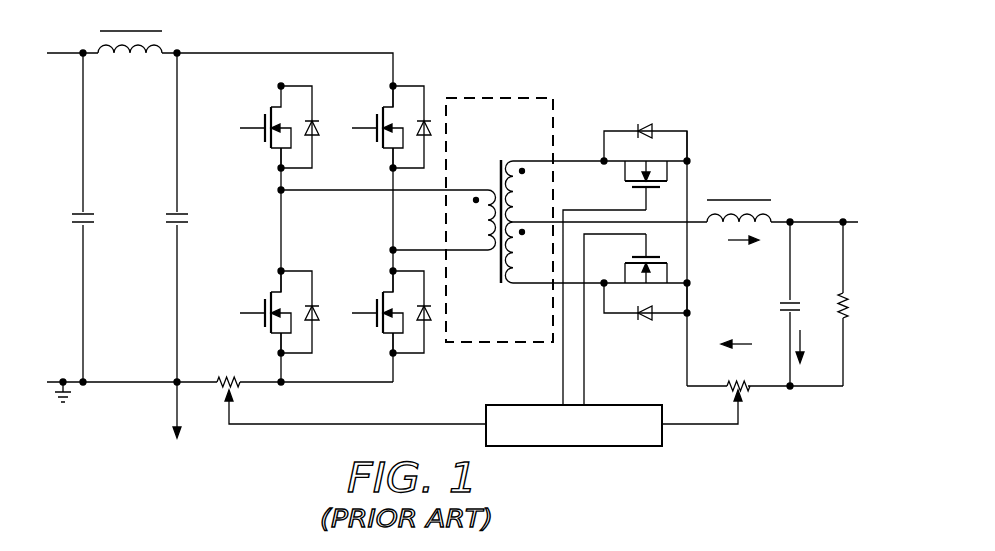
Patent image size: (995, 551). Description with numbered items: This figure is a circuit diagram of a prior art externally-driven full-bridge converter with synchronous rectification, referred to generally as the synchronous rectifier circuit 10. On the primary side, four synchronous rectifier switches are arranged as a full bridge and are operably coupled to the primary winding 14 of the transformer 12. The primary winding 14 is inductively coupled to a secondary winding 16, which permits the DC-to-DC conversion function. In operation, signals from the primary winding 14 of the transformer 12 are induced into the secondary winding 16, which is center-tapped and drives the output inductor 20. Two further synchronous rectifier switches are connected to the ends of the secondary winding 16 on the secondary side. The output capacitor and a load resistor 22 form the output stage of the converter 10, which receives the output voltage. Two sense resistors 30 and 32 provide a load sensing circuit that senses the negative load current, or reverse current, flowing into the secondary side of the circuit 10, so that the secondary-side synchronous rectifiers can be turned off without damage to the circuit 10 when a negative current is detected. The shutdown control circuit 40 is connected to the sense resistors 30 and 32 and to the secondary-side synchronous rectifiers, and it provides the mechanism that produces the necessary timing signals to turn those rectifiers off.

The full-bridge synchronous rectifier converter circuit 10 is at (473, 253).
The transformer 12 is at (494, 196).
The primary winding 14 is at (488, 190).
The secondary winding 16 is at (510, 160).
The output inductor 20 is at (772, 222).
The load resistor 22 is at (849, 310).
The sense resistor 30 is at (223, 388).
The sense resistor 32 is at (743, 392).
The shutdown control circuit 40 is at (575, 446).